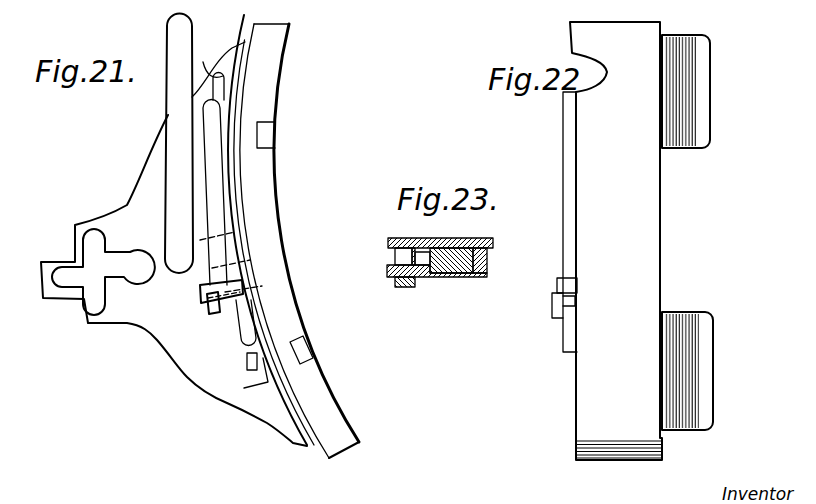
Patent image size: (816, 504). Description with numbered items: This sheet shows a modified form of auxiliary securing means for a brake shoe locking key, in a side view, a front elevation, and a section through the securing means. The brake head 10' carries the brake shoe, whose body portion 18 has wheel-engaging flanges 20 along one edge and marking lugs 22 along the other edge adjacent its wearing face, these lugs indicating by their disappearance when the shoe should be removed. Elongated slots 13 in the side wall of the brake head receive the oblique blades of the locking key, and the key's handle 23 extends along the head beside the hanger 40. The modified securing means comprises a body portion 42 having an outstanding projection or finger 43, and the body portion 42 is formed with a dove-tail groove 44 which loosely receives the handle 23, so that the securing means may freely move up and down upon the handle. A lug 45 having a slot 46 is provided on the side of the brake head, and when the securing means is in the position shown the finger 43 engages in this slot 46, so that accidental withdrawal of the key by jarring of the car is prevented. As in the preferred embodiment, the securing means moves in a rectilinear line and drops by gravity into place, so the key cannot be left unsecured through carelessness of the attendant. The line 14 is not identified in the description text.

In FIG. 21, the brake head 10' is at (174, 280).
In FIG. 21, the elongated slots 13 is at (218, 161).
In FIG. 21, the cable 14 is at (244, 30).
In FIG. 21, the body portion 18 is at (270, 102).
In FIG. 22, the body portion 18 is at (648, 215).
In FIG. 22, the wheel-engaging flanges 20 is at (692, 78).
In FIG. 21, the marking lugs 22 is at (268, 135).
In FIG. 21, the handle portion 23 is at (220, 188).
In FIG. 22, the handle portion 23 is at (563, 132).
In FIG. 21, the hanger 40 is at (167, 36).
In FIG. 21, the body portion 42 is at (243, 284).
In FIG. 23, the body portion 42 is at (487, 271).
In FIG. 22, the body portion 42 is at (565, 285).
In FIG. 21, the finger 43 is at (200, 288).
In FIG. 23, the finger 43 is at (418, 277).
In FIG. 23, the dove-tail groove 44 is at (487, 257).
In FIG. 21, the lug 45 is at (207, 306).
In FIG. 23, the lug 45 is at (395, 287).
In FIG. 22, the lug 45 is at (552, 310).
In FIG. 23, the slot 46 is at (405, 257).